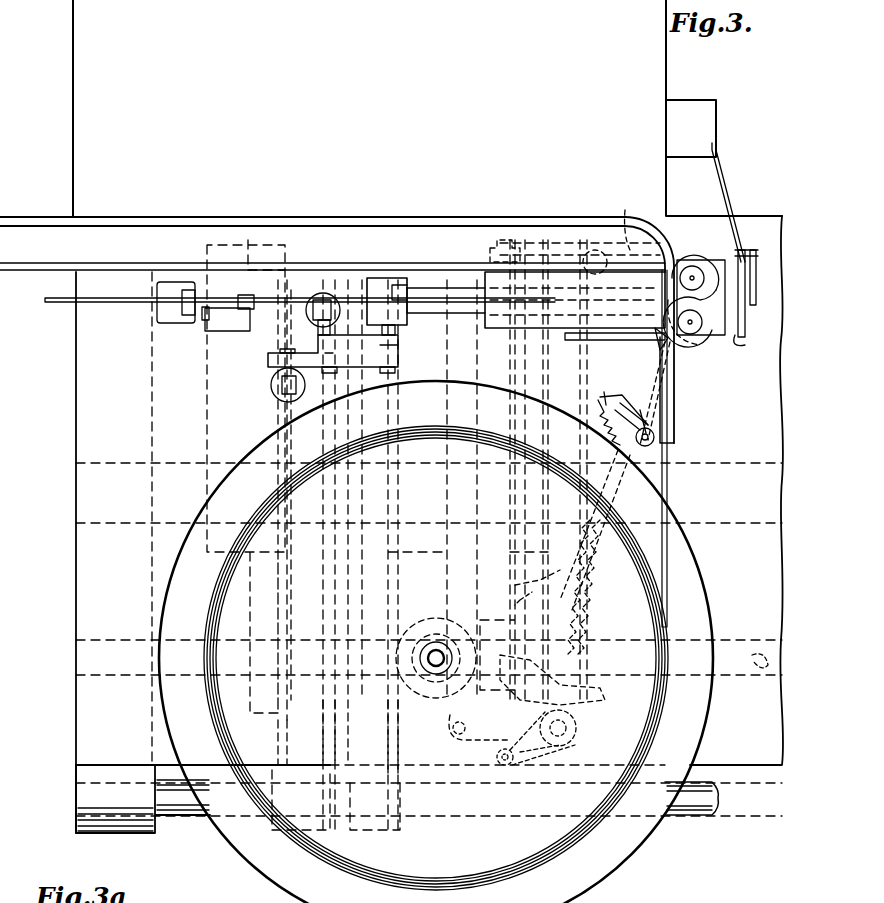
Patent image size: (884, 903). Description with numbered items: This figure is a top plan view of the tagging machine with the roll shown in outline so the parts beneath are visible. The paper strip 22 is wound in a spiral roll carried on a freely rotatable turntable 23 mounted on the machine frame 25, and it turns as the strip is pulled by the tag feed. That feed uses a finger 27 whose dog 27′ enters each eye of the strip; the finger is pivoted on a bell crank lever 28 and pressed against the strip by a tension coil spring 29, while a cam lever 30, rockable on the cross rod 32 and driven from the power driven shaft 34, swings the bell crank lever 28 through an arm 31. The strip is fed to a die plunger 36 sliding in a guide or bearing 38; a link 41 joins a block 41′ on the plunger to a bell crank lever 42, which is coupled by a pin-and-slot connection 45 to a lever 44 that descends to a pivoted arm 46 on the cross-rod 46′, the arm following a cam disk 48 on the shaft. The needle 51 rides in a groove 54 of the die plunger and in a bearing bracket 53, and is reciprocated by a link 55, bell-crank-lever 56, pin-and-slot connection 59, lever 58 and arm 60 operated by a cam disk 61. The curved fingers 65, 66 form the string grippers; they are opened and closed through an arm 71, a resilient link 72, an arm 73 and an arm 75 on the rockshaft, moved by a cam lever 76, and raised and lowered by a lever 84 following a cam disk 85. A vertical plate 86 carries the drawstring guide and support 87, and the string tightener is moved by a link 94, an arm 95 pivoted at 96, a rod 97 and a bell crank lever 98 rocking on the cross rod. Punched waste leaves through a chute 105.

The paper strip 22 is at (667, 562).
The turntable 23 is at (615, 845).
The machine frame 25 is at (88, 735).
The finger 27 is at (652, 430).
The dog 27′ is at (675, 400).
The bell crank lever 28 is at (655, 415).
The tension coil spring 29 is at (620, 410).
The cam lever 30 is at (590, 695).
The arm 31 is at (521, 579).
The cross rod 32 is at (752, 672).
The power driven shaft 34 is at (112, 468).
The die plunger 36 is at (420, 290).
The guide or bearing 38 is at (533, 275).
The link 41 is at (385, 352).
The block 41′ is at (380, 278).
The bell crank lever 42 is at (282, 360).
The lever 44 is at (270, 400).
The pin-and-slot connection 45 is at (282, 388).
The pivoted arm 46 is at (288, 738).
The cross-rod 46′ is at (192, 818).
The cam disk 48 is at (252, 573).
The needle 51 is at (52, 304).
The bearing bracket 53 is at (162, 312).
The groove 54 is at (465, 312).
The link 55 is at (203, 318).
The bell-crank-lever 56 is at (232, 332).
The lever 58 is at (317, 298).
The pin-and-slot connection 59 is at (330, 318).
The arm 60 is at (335, 748).
The cam disk 61 is at (348, 700).
The curved finger 65 is at (715, 340).
The curved finger 66 is at (700, 262).
The arm 71 is at (678, 355).
The resilient link 72 is at (598, 570).
The arm 73 is at (566, 748).
The arm 75 is at (490, 738).
The cam lever 76 is at (427, 622).
The lever 84 is at (400, 738).
The cam disk 85 is at (378, 700).
The vertical plate 86 is at (754, 346).
The drawstring guide and support 87 is at (732, 198).
The link 94 is at (765, 255).
The arm 95 is at (613, 222).
The pivot 96 is at (505, 240).
The rod 97 is at (590, 250).
The bell crank lever 98 is at (505, 601).
The chute 105 is at (24, 225).